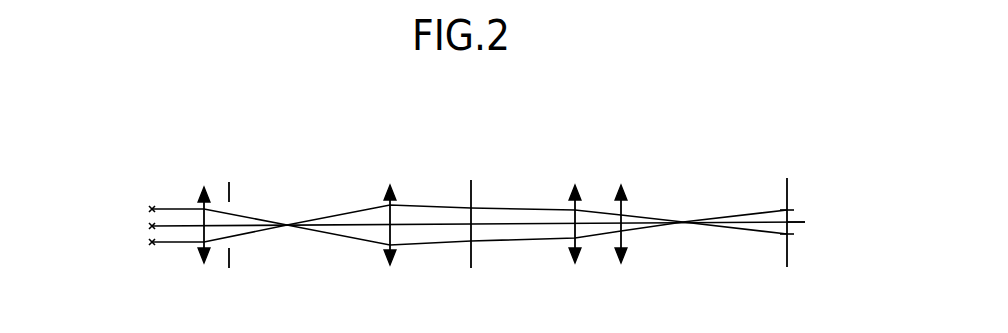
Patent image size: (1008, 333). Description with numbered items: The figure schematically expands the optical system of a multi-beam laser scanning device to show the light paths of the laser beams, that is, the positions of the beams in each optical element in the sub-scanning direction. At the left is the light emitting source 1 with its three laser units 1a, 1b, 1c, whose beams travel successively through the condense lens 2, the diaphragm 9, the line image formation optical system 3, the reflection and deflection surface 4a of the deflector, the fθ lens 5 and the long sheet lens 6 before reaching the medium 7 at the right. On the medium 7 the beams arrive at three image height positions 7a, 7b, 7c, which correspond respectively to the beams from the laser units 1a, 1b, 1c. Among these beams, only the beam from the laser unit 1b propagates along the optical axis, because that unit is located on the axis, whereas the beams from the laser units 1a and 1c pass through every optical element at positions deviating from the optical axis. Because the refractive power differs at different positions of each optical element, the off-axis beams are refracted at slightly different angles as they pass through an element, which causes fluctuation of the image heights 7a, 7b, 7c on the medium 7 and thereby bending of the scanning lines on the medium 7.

The light emitting source 1 is at (98, 221).
The laser unit 1a is at (140, 210).
The laser unit 1b is at (140, 227).
The laser unit 1c is at (140, 242).
The condense lens 2 is at (204, 206).
The diaphragm 9 is at (228, 208).
The line image formation optical system 3 is at (391, 207).
The reflection and deflection surface 4a is at (470, 208).
The fθ lens 5 is at (574, 205).
The long sheet lens 6 is at (621, 205).
The medium 7 is at (839, 220).
The image height position 7a is at (812, 208).
The image height position 7b is at (812, 220).
The image height position 7c is at (812, 238).